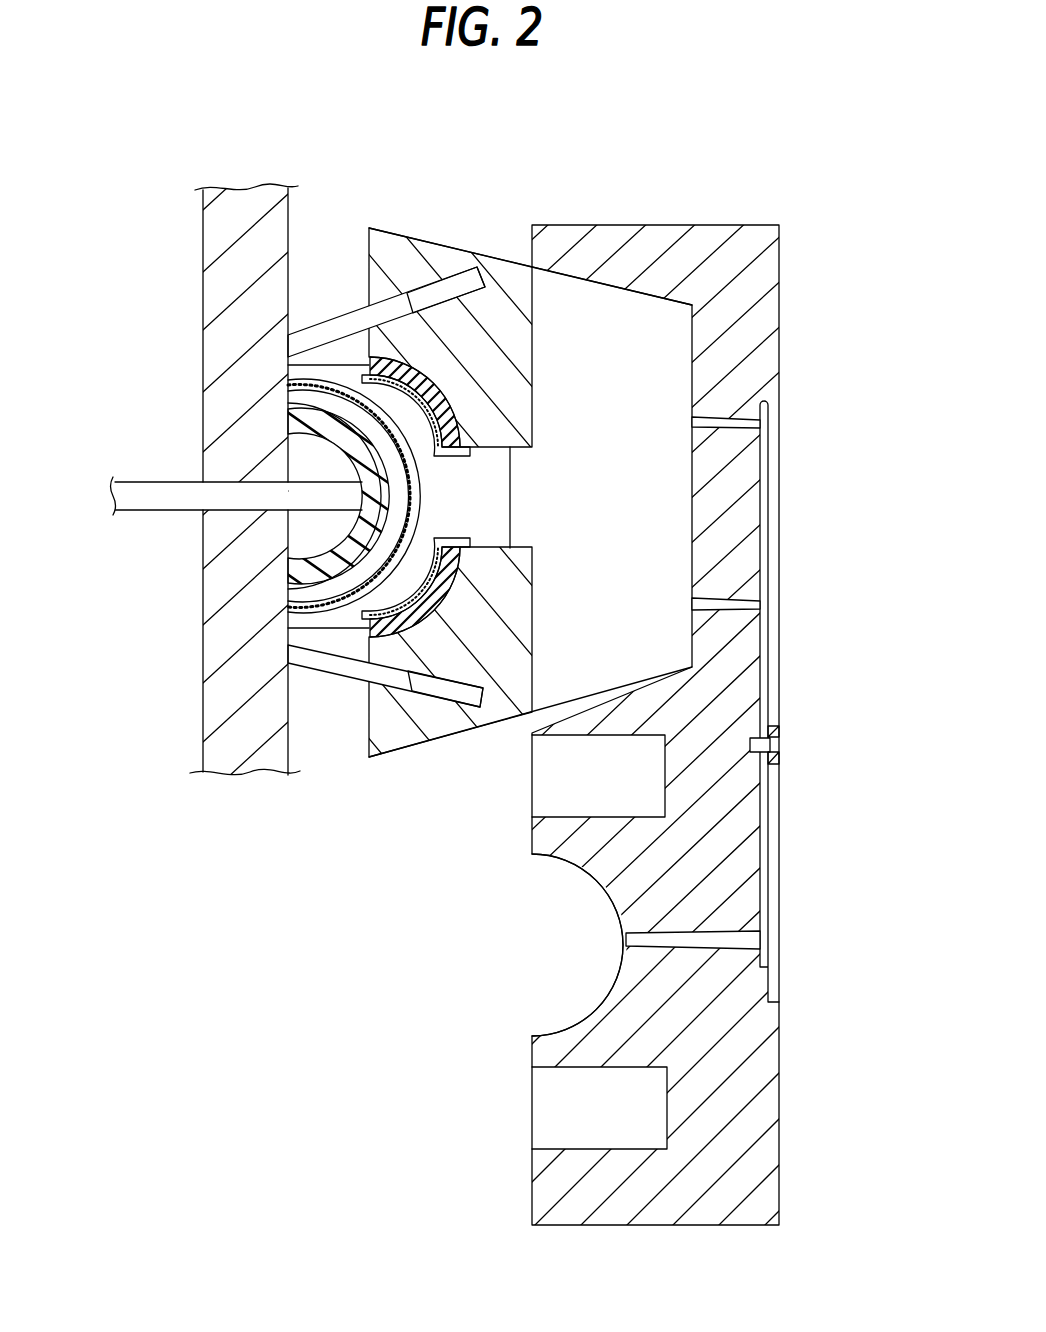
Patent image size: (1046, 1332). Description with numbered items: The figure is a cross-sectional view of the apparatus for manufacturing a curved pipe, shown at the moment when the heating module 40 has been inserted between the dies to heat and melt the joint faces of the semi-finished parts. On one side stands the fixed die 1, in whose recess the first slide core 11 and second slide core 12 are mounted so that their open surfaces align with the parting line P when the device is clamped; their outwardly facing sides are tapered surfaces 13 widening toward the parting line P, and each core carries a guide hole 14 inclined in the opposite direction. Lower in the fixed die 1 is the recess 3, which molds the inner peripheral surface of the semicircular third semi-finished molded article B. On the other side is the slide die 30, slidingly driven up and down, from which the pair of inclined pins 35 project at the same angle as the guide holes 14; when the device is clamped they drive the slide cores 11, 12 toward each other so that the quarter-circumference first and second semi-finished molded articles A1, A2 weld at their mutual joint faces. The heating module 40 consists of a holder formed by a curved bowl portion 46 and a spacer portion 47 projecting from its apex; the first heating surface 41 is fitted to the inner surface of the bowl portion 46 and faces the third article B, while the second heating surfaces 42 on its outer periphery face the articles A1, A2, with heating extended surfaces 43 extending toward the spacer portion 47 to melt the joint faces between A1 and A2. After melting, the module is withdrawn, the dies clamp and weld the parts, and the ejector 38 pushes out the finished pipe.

The fixed die 1 is at (678, 215).
The recess 3 is at (602, 990).
The first slide core 11 is at (503, 248).
The second slide core 12 is at (412, 760).
The tapered surface 13 is at (465, 255).
The guide hole 14 is at (433, 290).
The slide die 30 is at (243, 205).
The inclined pin 35 is at (330, 328).
The ejector 38 is at (148, 505).
The heating module 40 is at (538, 463).
The first heating surface 41 is at (288, 397).
The second heating surface 42 is at (425, 368).
The heating extended surface 43 is at (455, 437).
The bowl portion 46 is at (313, 552).
The spacer portion 47 is at (485, 497).
The parting line P is at (293, 192).
The third semi-finished molded article B is at (288, 422).
The first semi-finished molded article A1 is at (440, 395).
The second semi-finished molded article A2 is at (470, 610).